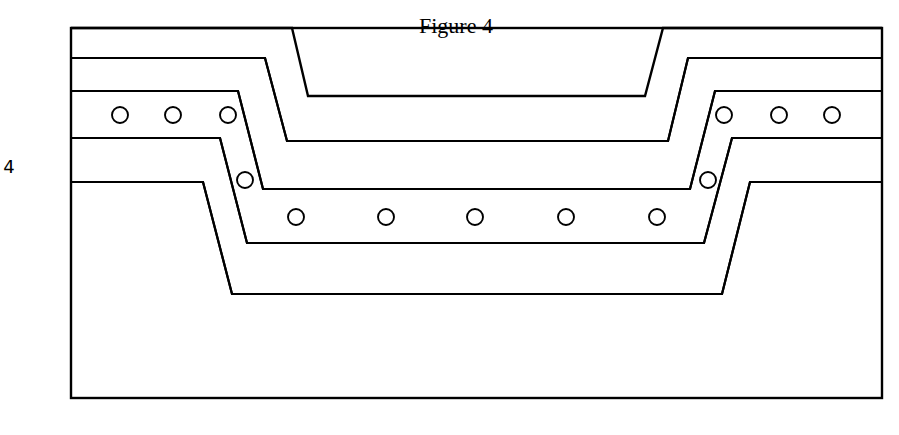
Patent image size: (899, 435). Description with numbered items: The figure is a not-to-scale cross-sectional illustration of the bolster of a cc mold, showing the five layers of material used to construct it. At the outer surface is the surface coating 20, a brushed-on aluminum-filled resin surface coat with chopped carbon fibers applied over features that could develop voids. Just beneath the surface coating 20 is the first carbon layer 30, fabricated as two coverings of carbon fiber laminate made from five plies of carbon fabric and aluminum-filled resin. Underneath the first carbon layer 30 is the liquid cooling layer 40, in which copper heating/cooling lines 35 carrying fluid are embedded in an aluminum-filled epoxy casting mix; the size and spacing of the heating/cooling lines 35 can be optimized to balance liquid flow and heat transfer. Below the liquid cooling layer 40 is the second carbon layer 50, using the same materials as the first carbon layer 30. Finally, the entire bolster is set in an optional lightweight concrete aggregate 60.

The surface coating 20 is at (476, 84).
The first carbon layer 30 is at (476, 123).
The heating/cooling lines 35 is at (304, 212).
The liquid cooling layer 40 is at (476, 167).
The second carbon layer 50 is at (476, 216).
The lightweight concrete aggregate 60 is at (476, 213).